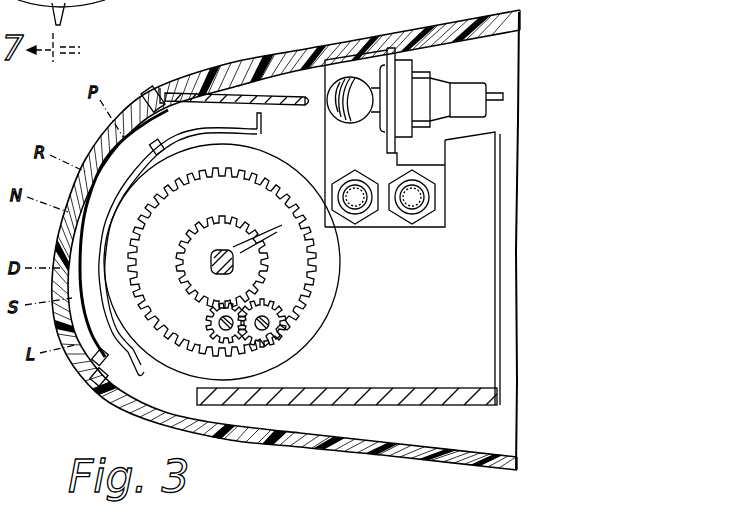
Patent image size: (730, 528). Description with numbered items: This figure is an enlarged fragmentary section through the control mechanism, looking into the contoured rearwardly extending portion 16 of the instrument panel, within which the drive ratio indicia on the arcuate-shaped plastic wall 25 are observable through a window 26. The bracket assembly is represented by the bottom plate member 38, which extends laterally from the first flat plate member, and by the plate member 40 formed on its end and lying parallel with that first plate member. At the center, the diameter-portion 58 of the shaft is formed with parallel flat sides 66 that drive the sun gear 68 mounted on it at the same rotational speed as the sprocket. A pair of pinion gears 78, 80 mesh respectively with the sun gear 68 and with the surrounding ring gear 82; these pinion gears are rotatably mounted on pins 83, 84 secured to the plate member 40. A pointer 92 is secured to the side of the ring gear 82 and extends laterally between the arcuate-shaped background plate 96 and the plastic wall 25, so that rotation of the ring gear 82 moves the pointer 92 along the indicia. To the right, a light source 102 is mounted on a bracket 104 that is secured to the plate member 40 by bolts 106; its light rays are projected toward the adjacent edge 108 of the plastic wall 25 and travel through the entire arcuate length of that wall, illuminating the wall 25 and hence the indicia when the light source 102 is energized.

The contoured rearwardly extending portion 16 is at (262, 62).
The arcuate-shaped plastic wall 25 is at (96, 350).
The window 26 is at (143, 108).
The bottom plate member 38 is at (383, 393).
The plate member 40 is at (443, 373).
The diameter-portion 58 is at (211, 250).
The parallel flat sides 66 is at (263, 236).
The sun gear 68 is at (250, 273).
The pinion gear 78 is at (240, 345).
The pinion gear 80 is at (290, 322).
The ring gear 82 is at (322, 302).
The pin 83 is at (219, 320).
The pin 84 is at (285, 338).
The pointer 92 is at (155, 144).
The arcuate-shaped background plate 96 is at (97, 233).
The light source 102 is at (347, 90).
The bracket 104 is at (338, 135).
The bolts 106 is at (412, 203).
The adjacent edge 108 is at (305, 103).